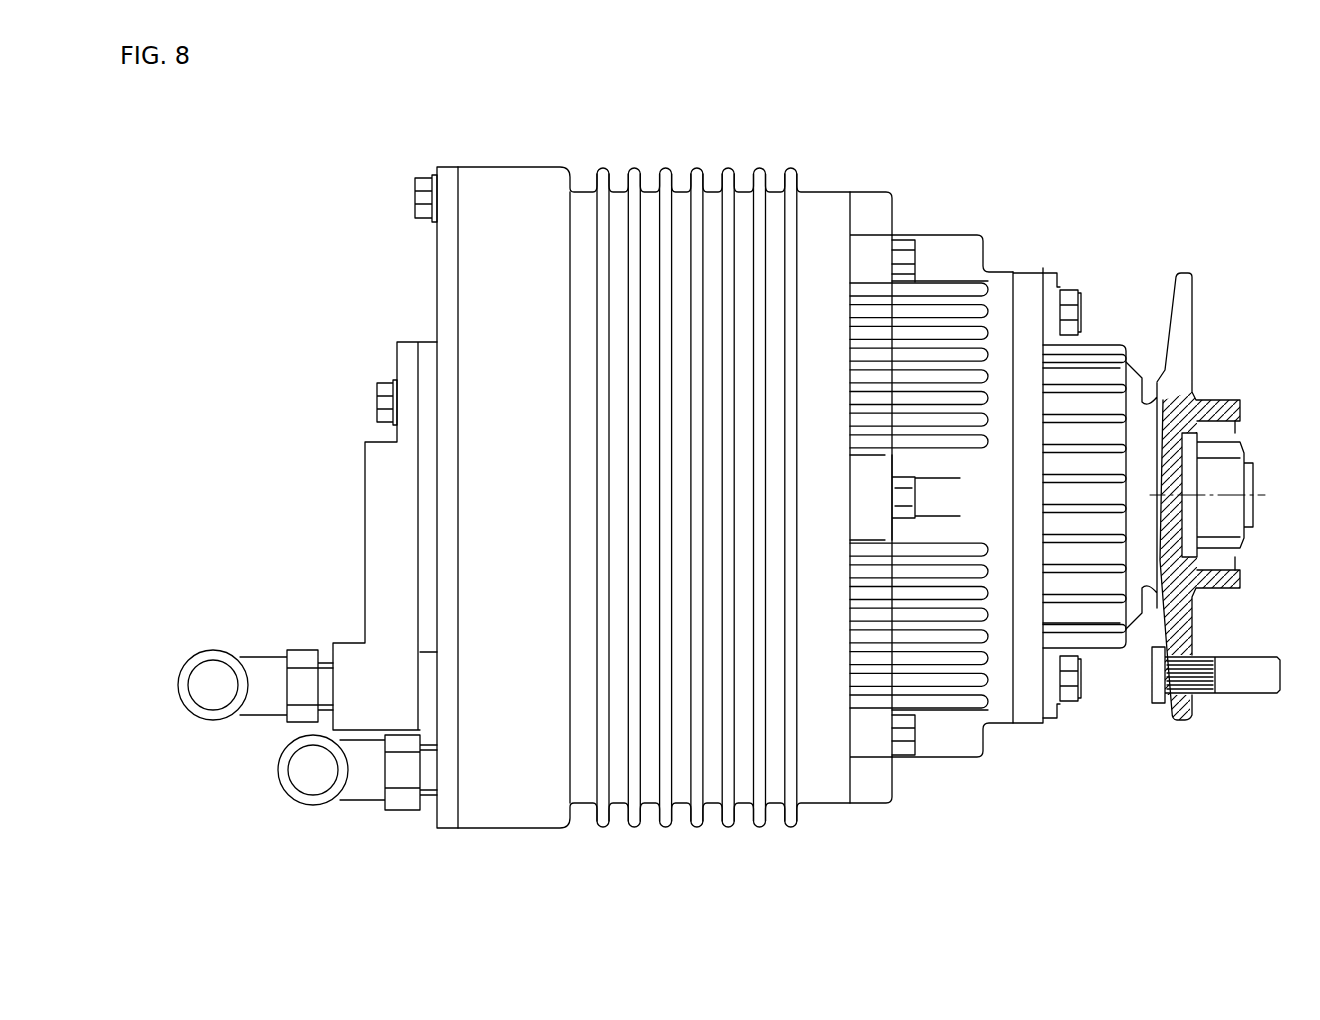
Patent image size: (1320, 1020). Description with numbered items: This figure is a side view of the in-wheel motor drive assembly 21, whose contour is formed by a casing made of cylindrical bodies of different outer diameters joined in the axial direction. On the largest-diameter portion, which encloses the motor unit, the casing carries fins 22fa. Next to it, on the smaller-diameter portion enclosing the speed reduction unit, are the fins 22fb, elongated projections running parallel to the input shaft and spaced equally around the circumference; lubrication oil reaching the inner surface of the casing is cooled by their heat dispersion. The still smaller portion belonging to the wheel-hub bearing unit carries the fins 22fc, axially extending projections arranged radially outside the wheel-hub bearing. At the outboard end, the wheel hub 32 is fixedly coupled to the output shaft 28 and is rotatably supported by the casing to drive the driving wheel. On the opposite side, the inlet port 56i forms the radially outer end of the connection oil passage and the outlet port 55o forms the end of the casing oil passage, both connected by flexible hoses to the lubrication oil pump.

The in-wheel motor drive assembly 21 is at (434, 157).
The fins 22fa is at (603, 829).
The fins 22fb is at (960, 708).
The fins 22fc is at (1103, 632).
The output shaft 28 is at (1255, 491).
The wheel hub 32 is at (1240, 582).
The outlet port 55o is at (313, 790).
The inlet port 56i is at (214, 672).